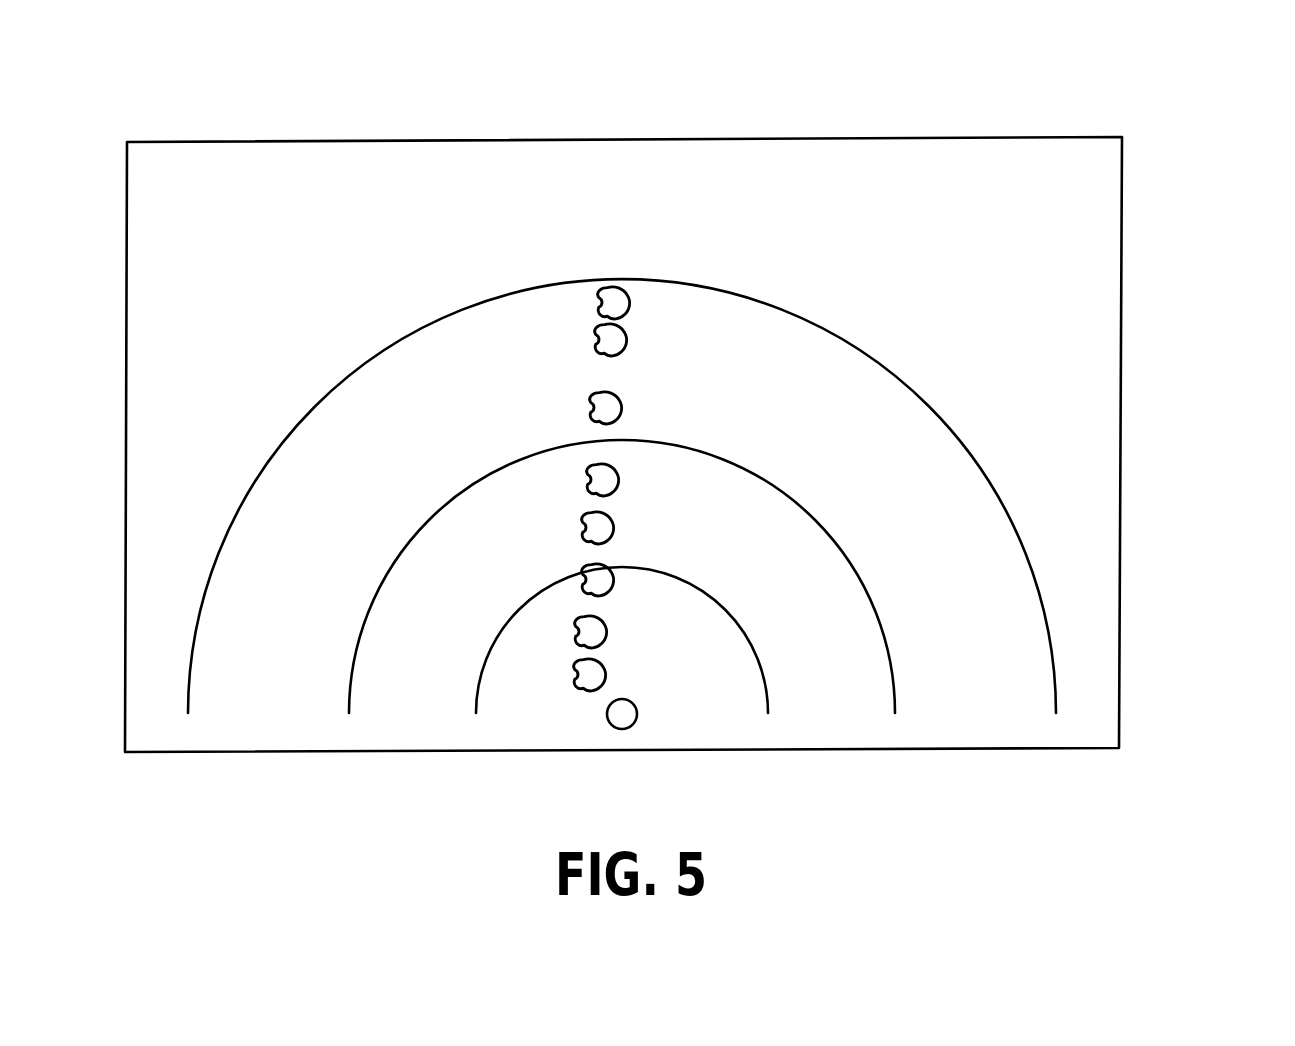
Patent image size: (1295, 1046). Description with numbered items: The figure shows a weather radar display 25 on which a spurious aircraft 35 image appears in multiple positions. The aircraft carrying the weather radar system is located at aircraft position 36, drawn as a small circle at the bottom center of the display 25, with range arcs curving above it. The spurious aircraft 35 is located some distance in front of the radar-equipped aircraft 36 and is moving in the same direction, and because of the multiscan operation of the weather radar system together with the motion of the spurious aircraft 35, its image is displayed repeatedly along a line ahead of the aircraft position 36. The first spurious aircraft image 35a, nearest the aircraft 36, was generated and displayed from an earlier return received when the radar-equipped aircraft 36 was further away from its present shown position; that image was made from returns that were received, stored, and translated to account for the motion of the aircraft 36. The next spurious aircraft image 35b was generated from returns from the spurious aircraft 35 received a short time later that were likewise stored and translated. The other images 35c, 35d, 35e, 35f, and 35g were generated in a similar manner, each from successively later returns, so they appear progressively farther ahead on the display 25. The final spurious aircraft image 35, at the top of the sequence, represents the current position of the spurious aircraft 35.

The weather radar display 25 is at (1123, 182).
The spurious aircraft 35 is at (618, 289).
The first spurious aircraft image 35a is at (601, 666).
The next spurious aircraft image 35b is at (604, 628).
The spurious aircraft image 35c is at (607, 567).
The spurious aircraft image 35d is at (611, 527).
The spurious aircraft image 35e is at (616, 478).
The spurious aircraft image 35f is at (619, 407).
The spurious aircraft image 35g is at (624, 341).
The aircraft position 36 is at (637, 716).